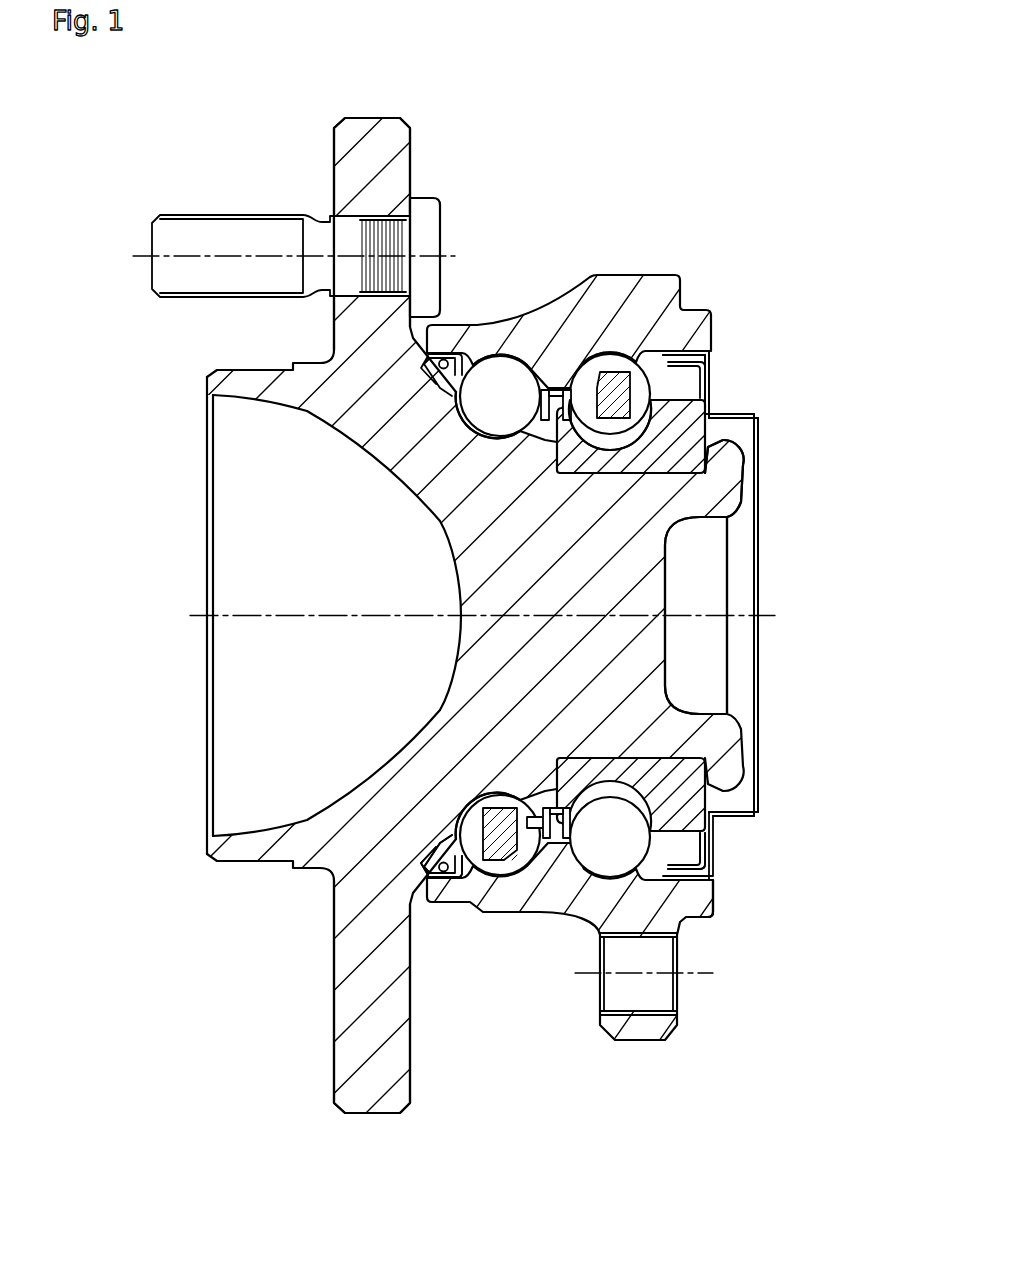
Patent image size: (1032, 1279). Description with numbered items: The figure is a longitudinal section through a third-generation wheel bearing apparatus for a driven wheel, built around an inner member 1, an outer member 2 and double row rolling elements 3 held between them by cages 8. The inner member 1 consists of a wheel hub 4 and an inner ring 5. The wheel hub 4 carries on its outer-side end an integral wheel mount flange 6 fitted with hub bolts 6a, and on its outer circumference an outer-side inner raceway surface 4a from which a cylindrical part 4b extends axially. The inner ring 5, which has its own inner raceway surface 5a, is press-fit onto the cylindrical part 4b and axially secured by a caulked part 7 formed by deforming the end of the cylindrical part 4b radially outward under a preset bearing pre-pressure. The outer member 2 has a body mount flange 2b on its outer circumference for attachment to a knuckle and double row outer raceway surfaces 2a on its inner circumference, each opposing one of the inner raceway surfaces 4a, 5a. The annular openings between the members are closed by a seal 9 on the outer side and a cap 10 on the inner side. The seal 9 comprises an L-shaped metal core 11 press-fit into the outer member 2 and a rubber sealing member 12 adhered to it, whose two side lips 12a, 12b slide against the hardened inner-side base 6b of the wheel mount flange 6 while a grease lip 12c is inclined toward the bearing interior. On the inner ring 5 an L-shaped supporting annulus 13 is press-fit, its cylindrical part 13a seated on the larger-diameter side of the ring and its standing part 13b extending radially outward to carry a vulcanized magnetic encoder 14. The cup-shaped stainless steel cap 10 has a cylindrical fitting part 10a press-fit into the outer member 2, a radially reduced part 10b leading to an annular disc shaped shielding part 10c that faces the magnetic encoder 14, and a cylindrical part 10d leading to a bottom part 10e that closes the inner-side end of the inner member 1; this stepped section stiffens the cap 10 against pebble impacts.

The inner member 1 is at (360, 450).
The outer member 2 is at (562, 328).
The outer raceway surface 2a is at (505, 382).
The body mount flange 2b is at (656, 1025).
The rolling element 3 is at (600, 856).
The wheel hub 4 is at (458, 650).
The inner raceway surface 4a is at (497, 406).
The cylindrical part 4b is at (673, 458).
The inner ring 5 is at (693, 433).
The inner raceway surface 5a is at (608, 405).
The wheel mount flange 6 is at (371, 130).
The hub bolt 6a is at (240, 236).
The inner-side base 6b is at (427, 360).
The caulked part 7 is at (728, 473).
The cage 8 is at (570, 813).
The seal 9 is at (175, 918).
The cap 10 is at (762, 572).
The cylindrical fitting part 10a is at (692, 346).
The radially reduced part 10b is at (708, 362).
The shielding part 10c is at (713, 398).
The cylindrical part 10d is at (737, 820).
The bottom part 10e is at (762, 652).
The metal core 11 is at (458, 898).
The sealing member 12 is at (222, 876).
The side lip 12a is at (445, 875).
The side lip 12b is at (437, 858).
The grease lip 12c is at (427, 841).
The supporting annulus 13 is at (797, 823).
The cylindrical part 13a is at (703, 838).
The standing part 13b is at (707, 863).
The magnetic encoder 14 is at (712, 888).